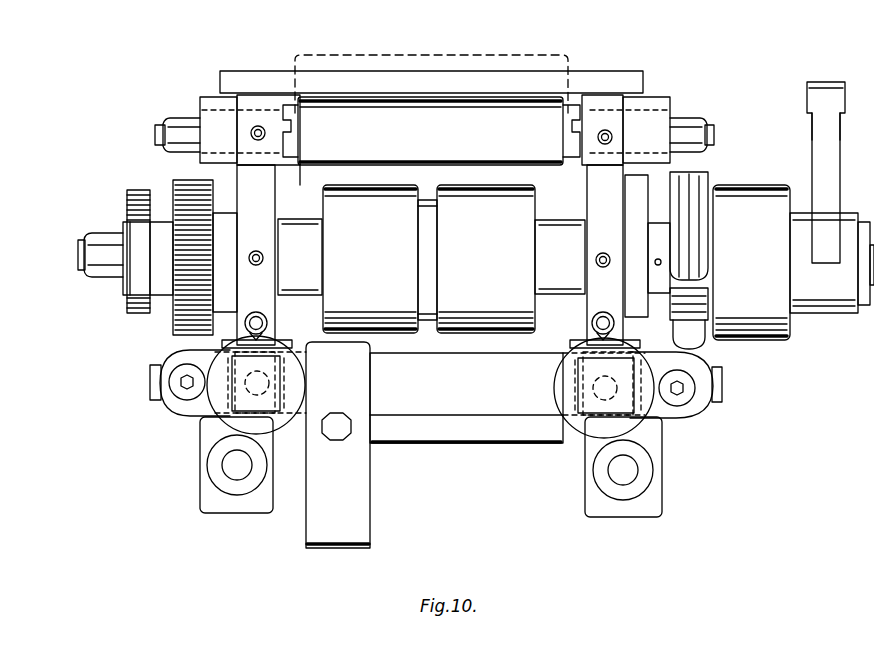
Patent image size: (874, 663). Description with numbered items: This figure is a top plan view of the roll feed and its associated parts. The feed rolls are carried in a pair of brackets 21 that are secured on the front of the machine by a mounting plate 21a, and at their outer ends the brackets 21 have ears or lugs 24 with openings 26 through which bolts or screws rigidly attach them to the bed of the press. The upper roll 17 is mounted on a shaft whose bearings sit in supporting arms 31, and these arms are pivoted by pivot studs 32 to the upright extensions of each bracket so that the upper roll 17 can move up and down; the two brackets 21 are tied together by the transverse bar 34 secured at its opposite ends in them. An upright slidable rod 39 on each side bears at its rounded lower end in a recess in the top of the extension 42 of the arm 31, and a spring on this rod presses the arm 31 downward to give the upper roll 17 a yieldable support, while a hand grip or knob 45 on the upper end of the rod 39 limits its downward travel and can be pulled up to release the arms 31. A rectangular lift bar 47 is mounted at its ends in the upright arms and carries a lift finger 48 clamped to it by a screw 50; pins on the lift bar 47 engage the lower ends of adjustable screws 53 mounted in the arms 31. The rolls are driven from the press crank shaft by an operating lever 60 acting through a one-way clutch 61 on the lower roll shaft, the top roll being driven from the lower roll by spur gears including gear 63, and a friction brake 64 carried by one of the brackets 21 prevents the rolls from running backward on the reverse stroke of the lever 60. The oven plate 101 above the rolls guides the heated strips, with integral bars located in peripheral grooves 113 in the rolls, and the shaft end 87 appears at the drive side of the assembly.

The mounting plate 21a is at (264, 78).
The transverse bar 34 is at (368, 110).
The brackets 21 is at (230, 198).
The pivot studs 32 is at (155, 140).
The drive shaft end 87 is at (128, 308).
The spur gear 63 is at (182, 318).
The supporting arms 31 is at (256, 234).
The upper roll 17 is at (478, 337).
The peripheral grooves 113 is at (428, 338).
The friction brake 64 is at (700, 262).
The one-way clutch 61 is at (742, 195).
The operating lever 60 is at (815, 159).
The slidable rod 39 is at (430, 387).
The extension 42 is at (303, 389).
The adjustable screw 53 is at (262, 306).
The hand grip or knob 45 is at (212, 400).
The ears or lugs 24 is at (207, 500).
The openings 26 is at (226, 468).
The lift finger 48 is at (362, 513).
The screw 50 is at (338, 440).
The lift bar 47 is at (446, 412).
The plate 101 is at (506, 441).